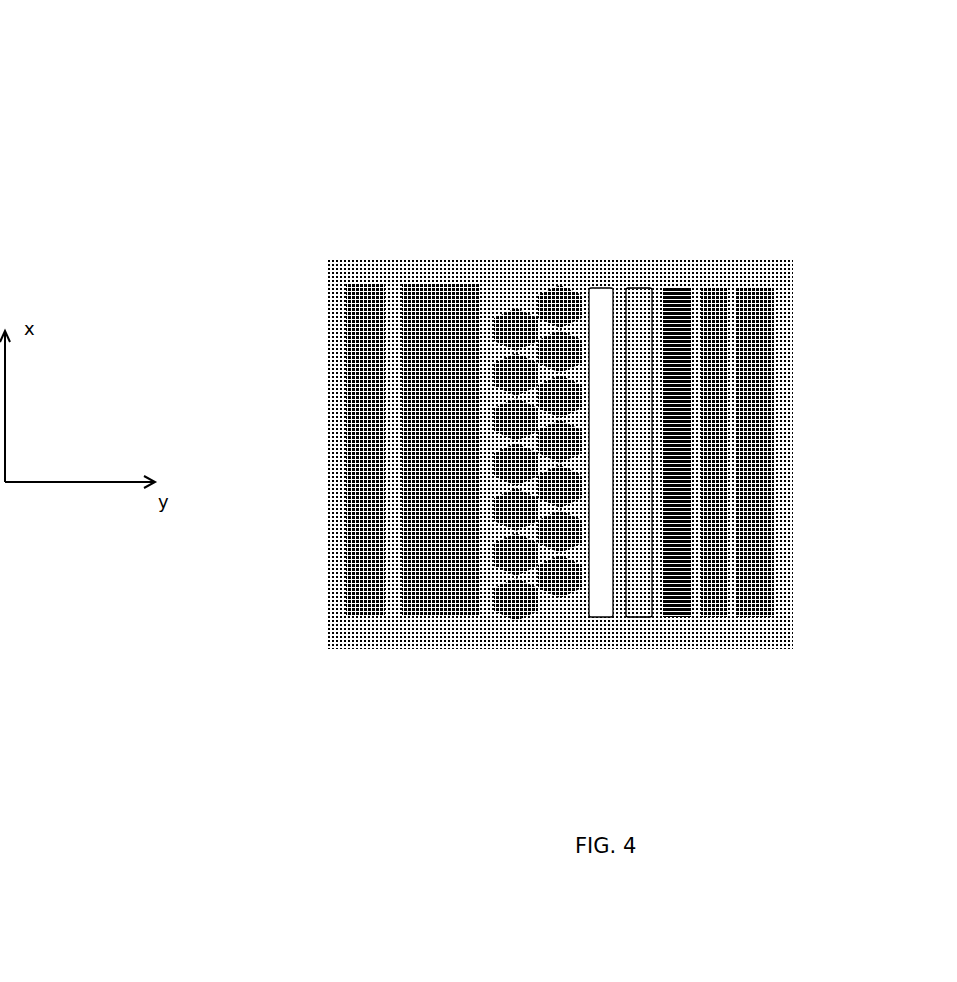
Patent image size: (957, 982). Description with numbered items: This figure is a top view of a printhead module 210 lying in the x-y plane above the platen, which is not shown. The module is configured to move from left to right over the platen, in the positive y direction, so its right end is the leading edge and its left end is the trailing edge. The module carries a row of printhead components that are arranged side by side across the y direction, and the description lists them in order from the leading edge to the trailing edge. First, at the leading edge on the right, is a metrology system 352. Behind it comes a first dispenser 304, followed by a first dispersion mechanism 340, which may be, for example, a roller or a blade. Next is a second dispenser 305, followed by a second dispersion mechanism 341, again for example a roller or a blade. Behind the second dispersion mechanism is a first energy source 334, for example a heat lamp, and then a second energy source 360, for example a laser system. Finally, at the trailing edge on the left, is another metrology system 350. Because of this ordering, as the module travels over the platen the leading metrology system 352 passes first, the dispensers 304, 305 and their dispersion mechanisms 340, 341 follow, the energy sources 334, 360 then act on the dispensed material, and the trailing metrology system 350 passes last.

The interconnect structure 210 is at (517, 134).
The metrology system 350 is at (365, 307).
The second energy source 360 is at (430, 307).
The first energy source 334 is at (542, 630).
The second dispersion mechanism 341 is at (605, 328).
The second dispenser 305 is at (640, 603).
The first dispersion mechanism 340 is at (677, 308).
The first dispenser 304 is at (715, 605).
The metrology system 352 is at (763, 487).